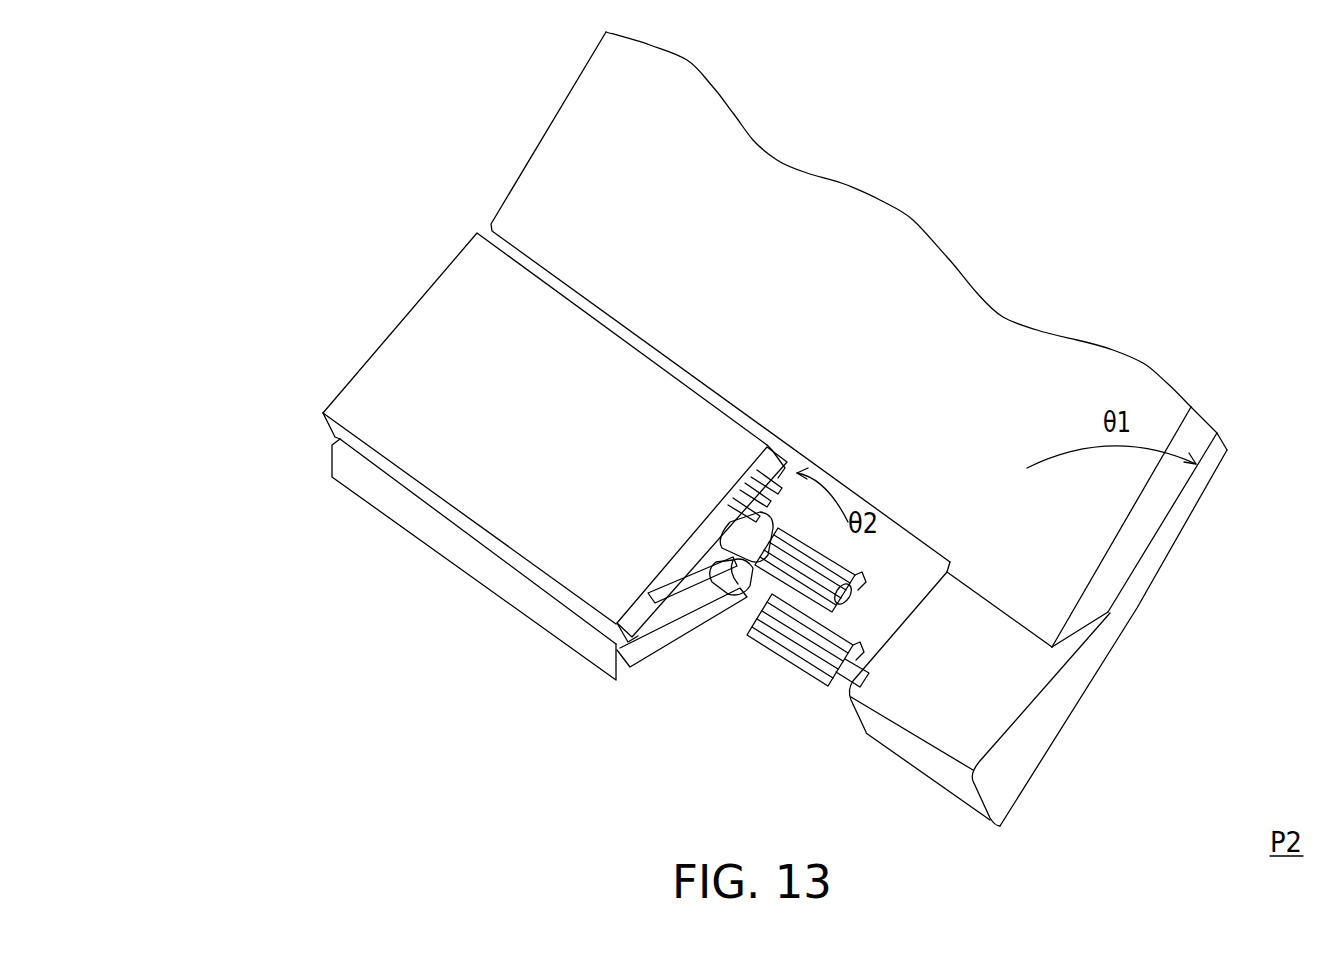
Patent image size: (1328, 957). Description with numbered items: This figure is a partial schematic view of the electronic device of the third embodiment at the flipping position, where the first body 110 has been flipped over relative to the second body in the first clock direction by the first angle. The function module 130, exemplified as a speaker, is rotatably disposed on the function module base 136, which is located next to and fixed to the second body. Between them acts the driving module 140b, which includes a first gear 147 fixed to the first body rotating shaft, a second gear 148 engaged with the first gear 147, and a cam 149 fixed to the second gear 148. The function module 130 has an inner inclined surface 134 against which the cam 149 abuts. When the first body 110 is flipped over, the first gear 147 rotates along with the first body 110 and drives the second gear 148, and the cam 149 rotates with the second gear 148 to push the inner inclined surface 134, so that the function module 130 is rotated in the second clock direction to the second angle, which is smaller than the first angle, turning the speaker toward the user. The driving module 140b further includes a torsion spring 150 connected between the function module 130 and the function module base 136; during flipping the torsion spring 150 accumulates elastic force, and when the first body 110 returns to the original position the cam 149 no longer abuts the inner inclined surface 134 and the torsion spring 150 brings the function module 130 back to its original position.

The first body 110 is at (1153, 563).
The function module 130 is at (540, 534).
The inner inclined surface 134 is at (746, 496).
The function module base 136 is at (440, 538).
The driving module 140b is at (484, 413).
The first gear 147 is at (790, 633).
The second gear 148 is at (845, 590).
The cam 149 is at (745, 538).
The torsion spring 150 is at (672, 620).